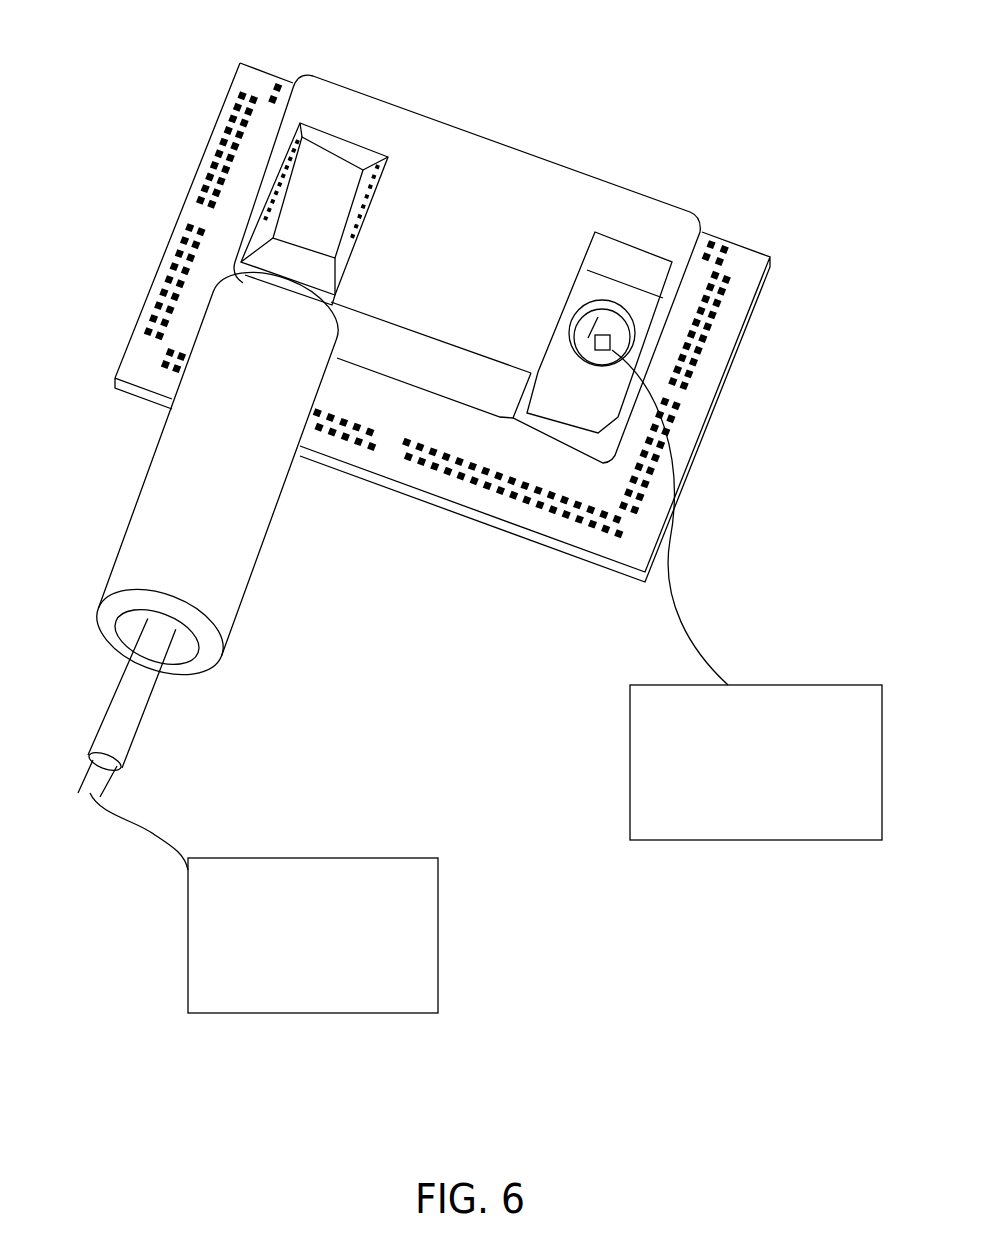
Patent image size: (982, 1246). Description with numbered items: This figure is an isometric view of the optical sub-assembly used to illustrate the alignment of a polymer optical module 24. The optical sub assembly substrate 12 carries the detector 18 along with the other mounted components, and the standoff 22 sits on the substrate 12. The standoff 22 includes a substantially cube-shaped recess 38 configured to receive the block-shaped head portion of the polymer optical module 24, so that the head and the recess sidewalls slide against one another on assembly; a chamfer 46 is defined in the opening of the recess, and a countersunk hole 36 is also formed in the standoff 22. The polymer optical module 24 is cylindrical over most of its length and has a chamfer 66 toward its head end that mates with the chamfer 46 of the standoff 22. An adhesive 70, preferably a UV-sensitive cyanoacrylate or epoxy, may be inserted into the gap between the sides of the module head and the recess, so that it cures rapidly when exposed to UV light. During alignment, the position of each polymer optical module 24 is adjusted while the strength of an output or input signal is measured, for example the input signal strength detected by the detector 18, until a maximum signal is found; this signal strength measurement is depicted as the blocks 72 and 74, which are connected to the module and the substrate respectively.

The optical sub assembly substrate 12 is at (695, 437).
The detector 18 is at (612, 335).
The standoff 22 is at (528, 182).
The polymer optical module 24 is at (242, 563).
The countersunk hole 36 is at (243, 235).
The recess 38 is at (615, 270).
The chamfer 46 is at (240, 278).
The chamfer 66 is at (297, 297).
The adhesive 70 is at (357, 213).
The signal strength measurement 72 is at (418, 923).
The signal strength measurement 74 is at (815, 820).